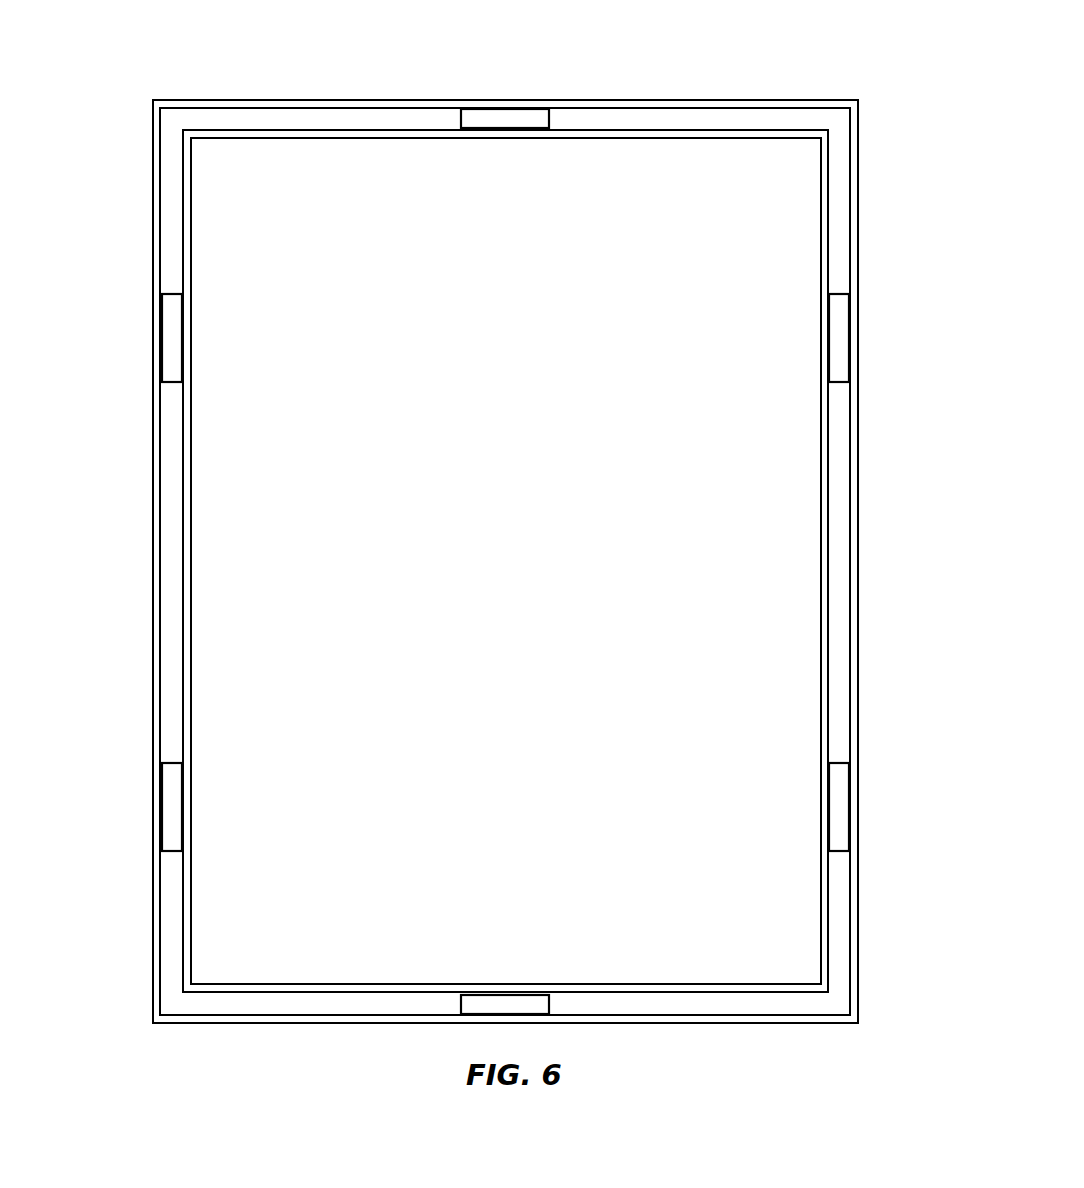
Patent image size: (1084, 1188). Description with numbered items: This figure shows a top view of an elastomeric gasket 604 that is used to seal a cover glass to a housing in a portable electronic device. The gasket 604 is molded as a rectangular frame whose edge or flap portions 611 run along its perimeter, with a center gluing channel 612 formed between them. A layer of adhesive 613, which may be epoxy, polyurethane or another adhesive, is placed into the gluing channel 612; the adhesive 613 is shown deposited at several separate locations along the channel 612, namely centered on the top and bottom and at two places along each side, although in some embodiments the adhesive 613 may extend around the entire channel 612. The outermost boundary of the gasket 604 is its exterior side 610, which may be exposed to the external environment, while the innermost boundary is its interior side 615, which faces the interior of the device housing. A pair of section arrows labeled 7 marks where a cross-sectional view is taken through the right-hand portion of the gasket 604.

The elastomeric gasket 604 is at (857, 48).
The exterior side 610 is at (148, 209).
The edge portions 611 is at (703, 99).
The center gluing channel 612 is at (777, 116).
The layer of adhesive 613 is at (508, 131).
The interior side 615 is at (202, 214).
The section line 7- 7 is at (813, 636).